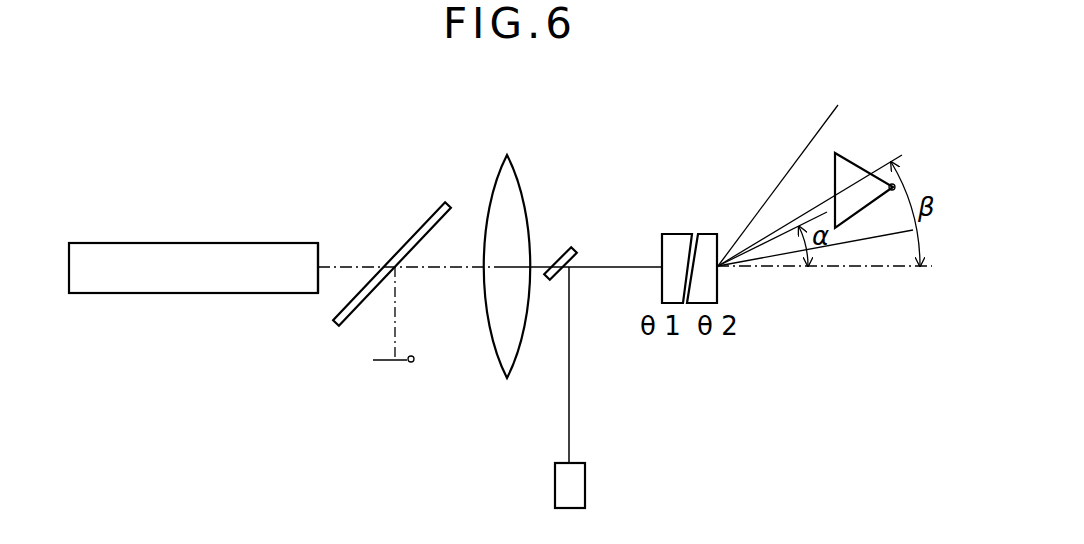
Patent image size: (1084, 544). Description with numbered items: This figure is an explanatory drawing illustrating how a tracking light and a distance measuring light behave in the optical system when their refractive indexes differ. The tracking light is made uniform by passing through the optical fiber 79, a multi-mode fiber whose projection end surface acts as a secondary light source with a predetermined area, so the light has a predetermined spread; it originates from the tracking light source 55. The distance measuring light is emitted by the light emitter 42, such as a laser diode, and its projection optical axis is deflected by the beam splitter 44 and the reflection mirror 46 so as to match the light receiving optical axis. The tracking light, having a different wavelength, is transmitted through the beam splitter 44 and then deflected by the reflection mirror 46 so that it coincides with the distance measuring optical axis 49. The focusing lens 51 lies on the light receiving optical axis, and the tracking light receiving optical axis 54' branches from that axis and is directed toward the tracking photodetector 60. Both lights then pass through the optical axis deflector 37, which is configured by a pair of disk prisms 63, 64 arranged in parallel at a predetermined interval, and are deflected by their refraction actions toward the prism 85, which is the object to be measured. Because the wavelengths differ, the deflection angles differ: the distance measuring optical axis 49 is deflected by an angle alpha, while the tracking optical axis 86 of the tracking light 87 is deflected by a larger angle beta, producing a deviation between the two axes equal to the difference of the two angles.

The optical fiber 79 is at (158, 295).
The tracking light source 55 is at (320, 248).
The beam splitter 44 is at (397, 243).
The tracking light receiving optical axis 54' is at (434, 313).
The tracking photodetector 60 is at (383, 362).
The focusing lens 51 is at (523, 192).
The reflection mirror 46 is at (575, 246).
The optical axis deflector 37 is at (684, 214).
The disk prism 63 is at (668, 233).
The disk prism 64 is at (712, 233).
The tracking light 87 is at (797, 162).
The tracking optical axis 86 is at (883, 163).
The distance measuring optical axis 49 is at (782, 237).
The prism 85 is at (857, 222).
The light emitter 42 is at (586, 487).